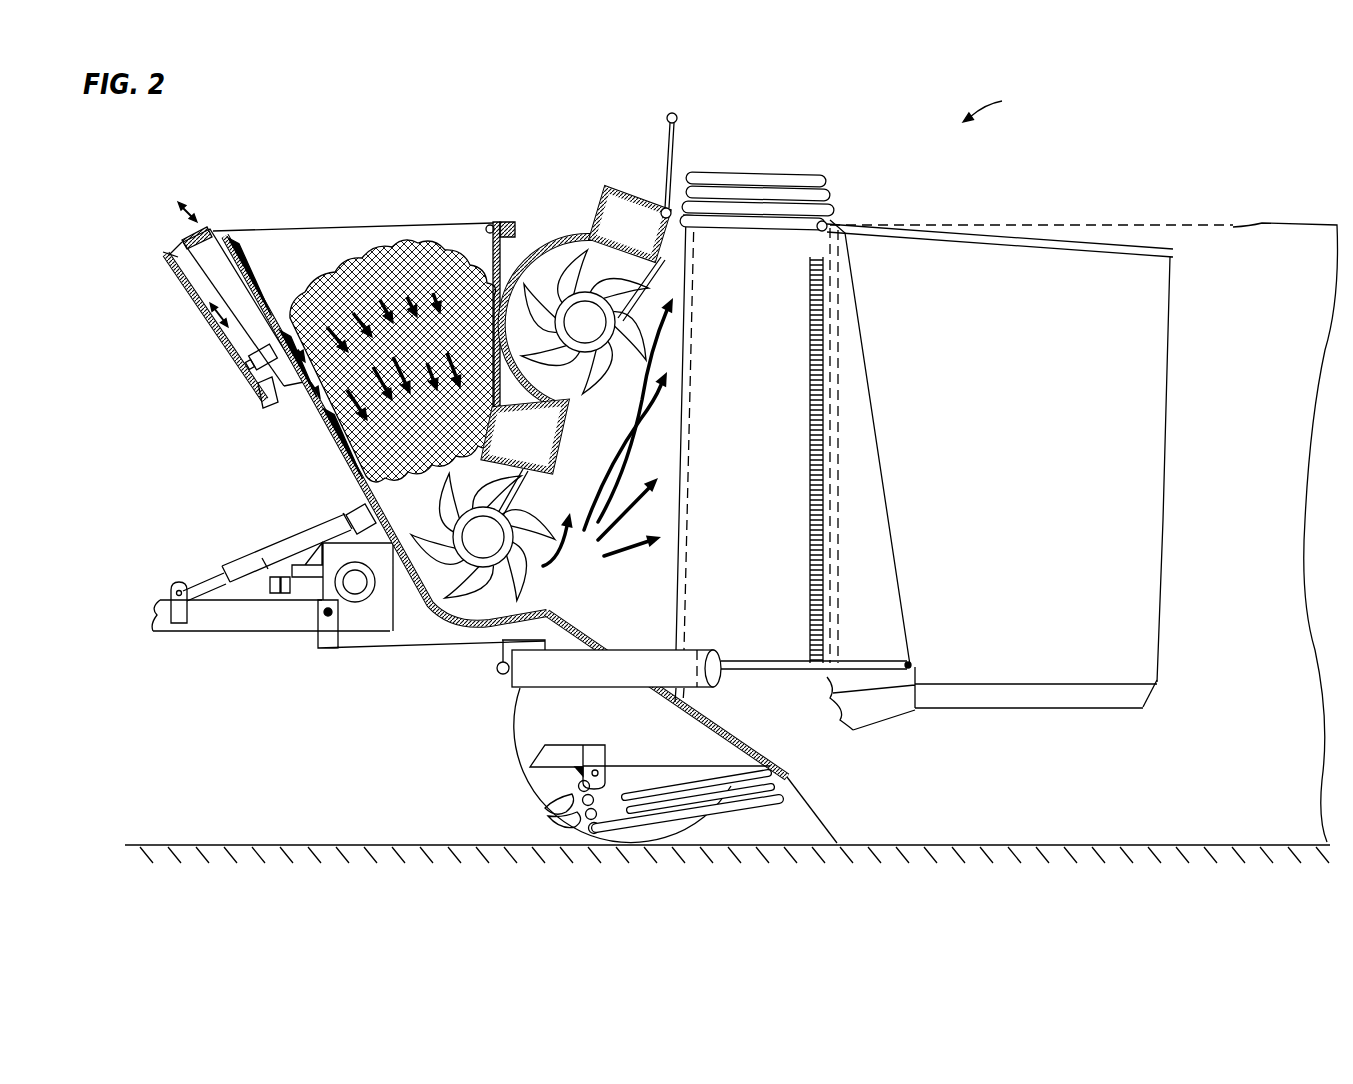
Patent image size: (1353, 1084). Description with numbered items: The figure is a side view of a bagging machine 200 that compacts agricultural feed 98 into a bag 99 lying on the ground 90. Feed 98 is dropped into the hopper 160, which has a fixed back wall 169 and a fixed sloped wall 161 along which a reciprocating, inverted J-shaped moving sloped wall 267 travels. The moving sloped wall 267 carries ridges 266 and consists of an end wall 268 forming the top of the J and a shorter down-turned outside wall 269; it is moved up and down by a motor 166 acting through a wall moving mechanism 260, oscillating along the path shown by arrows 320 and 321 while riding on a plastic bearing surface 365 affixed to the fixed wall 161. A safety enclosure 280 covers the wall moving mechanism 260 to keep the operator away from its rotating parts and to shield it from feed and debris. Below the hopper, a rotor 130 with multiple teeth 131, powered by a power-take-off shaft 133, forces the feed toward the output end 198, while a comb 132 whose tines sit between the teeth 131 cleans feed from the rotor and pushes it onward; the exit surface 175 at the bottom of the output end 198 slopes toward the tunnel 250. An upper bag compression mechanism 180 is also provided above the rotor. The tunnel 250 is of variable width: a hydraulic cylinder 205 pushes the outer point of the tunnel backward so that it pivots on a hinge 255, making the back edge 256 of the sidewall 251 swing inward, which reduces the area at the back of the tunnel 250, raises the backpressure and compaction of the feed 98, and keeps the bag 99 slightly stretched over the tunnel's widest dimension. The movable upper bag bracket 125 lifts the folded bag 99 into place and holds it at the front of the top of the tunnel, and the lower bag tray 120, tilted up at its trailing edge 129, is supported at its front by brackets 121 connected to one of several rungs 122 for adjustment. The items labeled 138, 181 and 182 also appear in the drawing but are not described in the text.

The ground 90 is at (258, 845).
The feed 98 is at (370, 255).
The bag 99 is at (786, 178).
The lower bag tray 120 is at (614, 843).
The brackets 121 is at (603, 756).
The rungs 122 is at (545, 810).
The movable upper bag bracket 125 is at (665, 136).
The trailing edge 129 is at (780, 783).
The rotor 130 is at (470, 512).
The teeth 131 is at (440, 502).
The comb 132 is at (530, 482).
The power-take-off shaft 133 is at (262, 562).
The housing top 138 is at (296, 230).
The hopper 160 is at (450, 228).
The fixed sloped wall 161 is at (338, 455).
The motor 166 is at (270, 382).
The fixed back wall 169 is at (492, 222).
The exit surface 175 is at (705, 710).
The upper bag compression mechanism 180 is at (597, 370).
The upper fan blades 181 is at (597, 266).
The upper fan duct 182 is at (632, 268).
The output end 198 is at (480, 612).
The bagging machine 200 is at (1004, 104).
The hydraulic cylinder 205 is at (618, 654).
The tunnel 250 is at (1163, 488).
The sidewall 251 is at (1058, 686).
The hinge 255 is at (810, 386).
The back edge 256 is at (1159, 681).
The wall moving mechanism 260 is at (234, 418).
The ridges 266 is at (240, 268).
The moving sloped wall 267 is at (228, 240).
The end wall 268 is at (185, 234).
The outside wall 269 is at (187, 267).
The safety enclosure 280 is at (165, 264).
The arrow 320 is at (212, 200).
The arrow 321 is at (218, 345).
The plastic bearing surface 365 is at (343, 465).